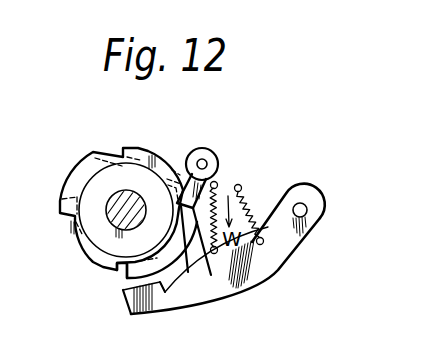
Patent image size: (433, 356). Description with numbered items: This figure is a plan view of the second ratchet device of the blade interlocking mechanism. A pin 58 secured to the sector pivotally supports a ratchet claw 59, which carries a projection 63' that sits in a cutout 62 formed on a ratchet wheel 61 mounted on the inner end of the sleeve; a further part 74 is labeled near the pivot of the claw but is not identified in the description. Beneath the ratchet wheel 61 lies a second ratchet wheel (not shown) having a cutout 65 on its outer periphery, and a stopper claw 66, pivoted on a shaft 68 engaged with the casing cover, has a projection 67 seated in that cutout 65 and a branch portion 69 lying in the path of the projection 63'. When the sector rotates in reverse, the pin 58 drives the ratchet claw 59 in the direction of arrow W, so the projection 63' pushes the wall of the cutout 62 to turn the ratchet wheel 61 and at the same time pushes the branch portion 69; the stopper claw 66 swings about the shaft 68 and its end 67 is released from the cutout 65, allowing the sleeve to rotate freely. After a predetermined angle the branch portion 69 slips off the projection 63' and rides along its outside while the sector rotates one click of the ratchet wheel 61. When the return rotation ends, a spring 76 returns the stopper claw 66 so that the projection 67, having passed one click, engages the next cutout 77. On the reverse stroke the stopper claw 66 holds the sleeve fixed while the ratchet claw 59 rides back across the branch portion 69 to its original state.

The pin 58 is at (200, 148).
The ratchet claw 59 is at (213, 148).
The ratchet wheel 61 is at (153, 145).
The cutout 62 is at (216, 177).
The projection 63' is at (191, 278).
The cutout 65 is at (127, 271).
The stopper claw 66 is at (215, 296).
The projection 67 is at (133, 307).
The shaft 68 is at (303, 211).
The branch portion 69 is at (186, 214).
The pivot pin 74 is at (219, 152).
The spring 76 is at (279, 186).
The cutout 77 is at (93, 232).